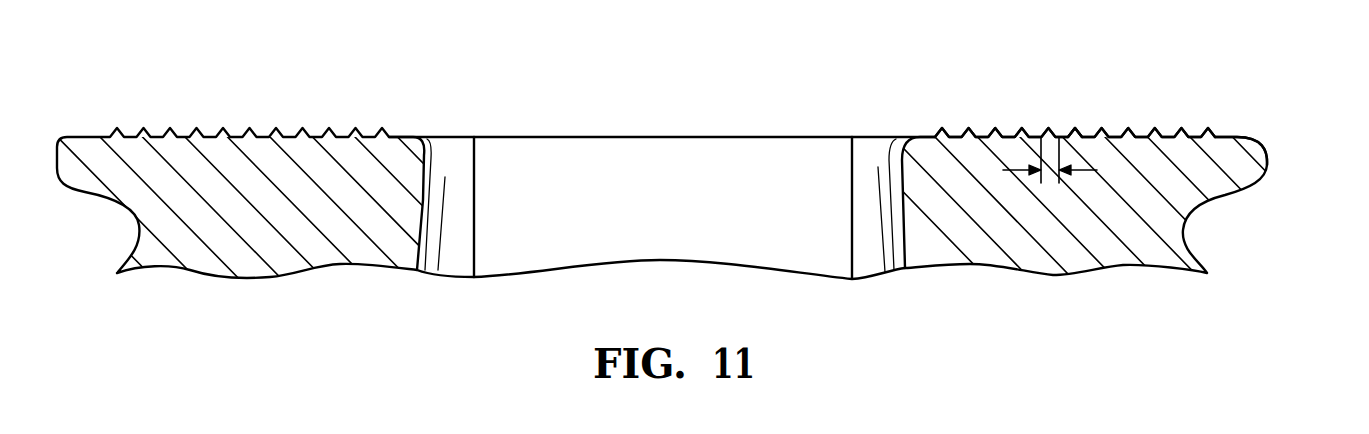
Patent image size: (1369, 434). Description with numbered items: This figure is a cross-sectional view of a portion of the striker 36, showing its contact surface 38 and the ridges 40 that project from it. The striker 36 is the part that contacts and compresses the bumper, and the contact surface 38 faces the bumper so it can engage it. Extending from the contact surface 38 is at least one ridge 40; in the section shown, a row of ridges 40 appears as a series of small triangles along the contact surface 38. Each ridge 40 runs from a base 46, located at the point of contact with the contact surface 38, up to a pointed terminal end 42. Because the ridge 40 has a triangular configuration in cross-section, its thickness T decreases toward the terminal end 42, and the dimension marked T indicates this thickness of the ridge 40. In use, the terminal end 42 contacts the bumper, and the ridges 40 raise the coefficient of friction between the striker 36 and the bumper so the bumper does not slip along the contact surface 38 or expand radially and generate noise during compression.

The striker 36 is at (1153, 248).
The contact surface 38 is at (1237, 133).
The ridge 40 is at (1157, 129).
The terminal end 42 is at (1076, 128).
The base 46 is at (933, 137).
The thickness T is at (1082, 170).